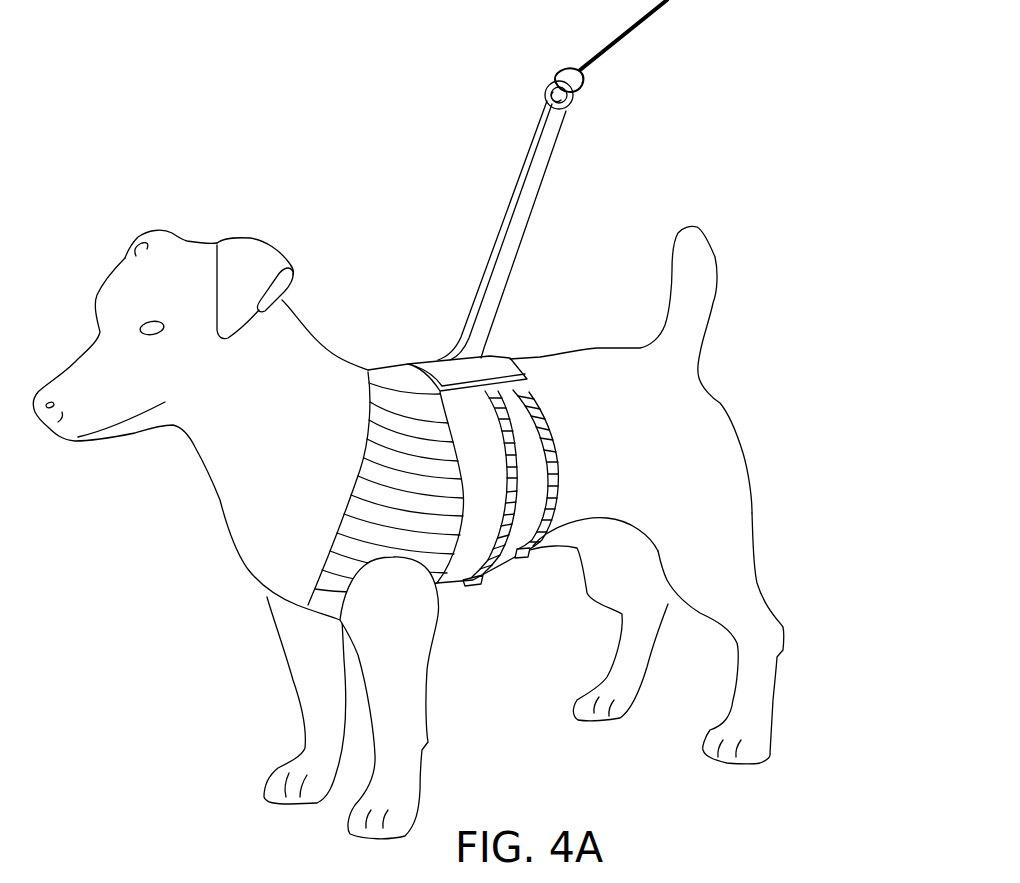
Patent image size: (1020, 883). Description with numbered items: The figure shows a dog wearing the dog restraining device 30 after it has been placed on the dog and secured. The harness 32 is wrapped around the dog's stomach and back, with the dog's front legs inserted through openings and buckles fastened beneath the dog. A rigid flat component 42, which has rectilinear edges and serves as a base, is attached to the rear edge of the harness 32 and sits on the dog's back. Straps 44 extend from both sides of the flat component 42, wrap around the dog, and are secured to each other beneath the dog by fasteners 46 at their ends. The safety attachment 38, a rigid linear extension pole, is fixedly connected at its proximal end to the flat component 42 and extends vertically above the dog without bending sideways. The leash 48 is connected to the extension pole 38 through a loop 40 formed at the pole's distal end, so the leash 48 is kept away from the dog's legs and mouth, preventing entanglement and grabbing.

The dog restraining device 30 is at (453, 347).
The harness 32 is at (340, 487).
The safety attachment 38 is at (515, 180).
The loop 40 is at (548, 88).
The flat component 42 is at (503, 353).
The straps 44 is at (557, 492).
The fasteners 46 is at (476, 584).
The leash 48 is at (648, 17).